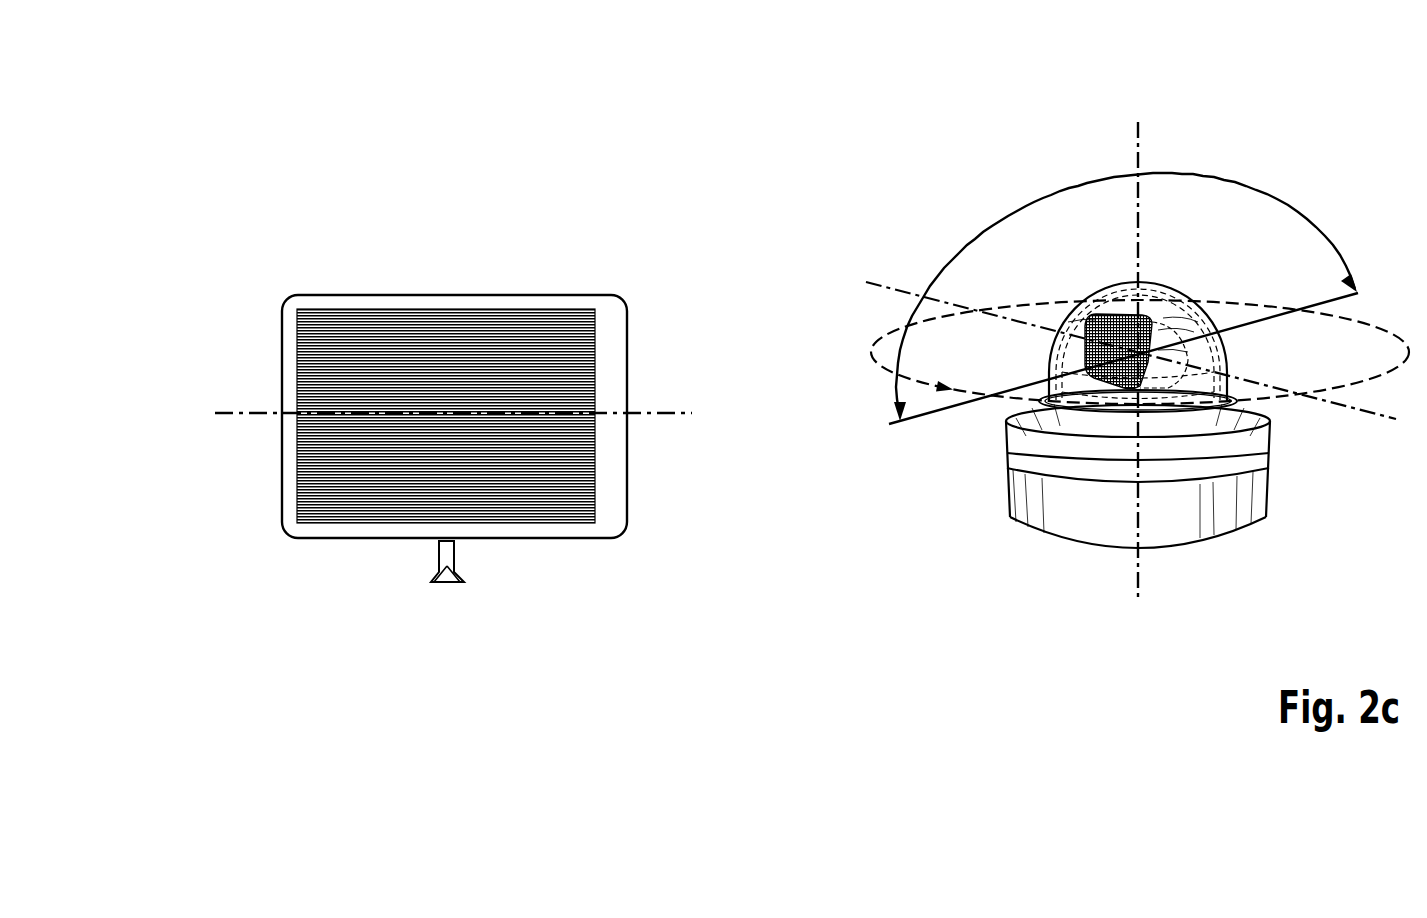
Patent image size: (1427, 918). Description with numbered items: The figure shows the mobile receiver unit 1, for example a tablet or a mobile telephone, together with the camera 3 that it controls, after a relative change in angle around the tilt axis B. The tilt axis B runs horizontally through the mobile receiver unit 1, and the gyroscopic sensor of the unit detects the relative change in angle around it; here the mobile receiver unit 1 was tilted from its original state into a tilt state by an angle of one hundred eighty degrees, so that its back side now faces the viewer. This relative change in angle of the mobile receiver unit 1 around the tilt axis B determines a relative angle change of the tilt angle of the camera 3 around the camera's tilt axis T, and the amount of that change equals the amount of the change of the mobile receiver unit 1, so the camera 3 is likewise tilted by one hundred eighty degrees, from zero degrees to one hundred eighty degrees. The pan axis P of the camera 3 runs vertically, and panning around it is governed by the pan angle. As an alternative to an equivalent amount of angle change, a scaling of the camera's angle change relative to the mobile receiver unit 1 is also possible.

The mobile receiver unit 1 is at (220, 152).
The camera 3 is at (946, 233).
The tilt axis B is at (453, 396).
The tilt axis T is at (1131, 337).
The pan axis P is at (1149, 359).